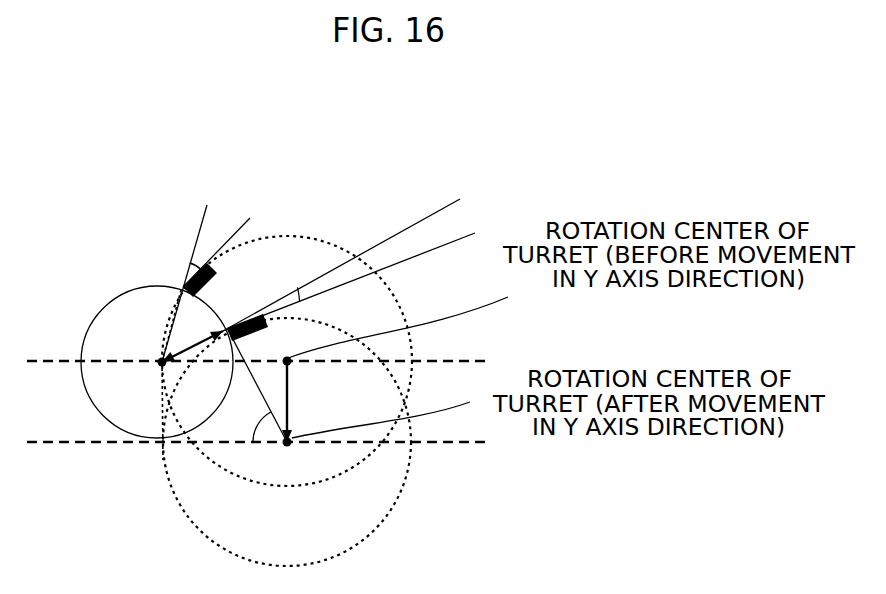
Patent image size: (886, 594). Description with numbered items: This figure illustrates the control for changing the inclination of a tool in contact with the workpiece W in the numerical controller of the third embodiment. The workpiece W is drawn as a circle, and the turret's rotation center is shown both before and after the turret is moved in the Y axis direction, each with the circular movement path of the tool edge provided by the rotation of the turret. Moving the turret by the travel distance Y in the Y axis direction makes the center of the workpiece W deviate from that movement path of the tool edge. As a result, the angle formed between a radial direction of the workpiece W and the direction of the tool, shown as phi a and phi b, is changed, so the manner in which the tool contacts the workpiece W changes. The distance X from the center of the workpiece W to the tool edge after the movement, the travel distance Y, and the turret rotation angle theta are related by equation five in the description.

The workpiece W is at (142, 315).
The distance from the center of the workpiece to the edge of the tool X is at (192, 343).
The travel distance of the turret in the Y axis direction Y is at (289, 398).